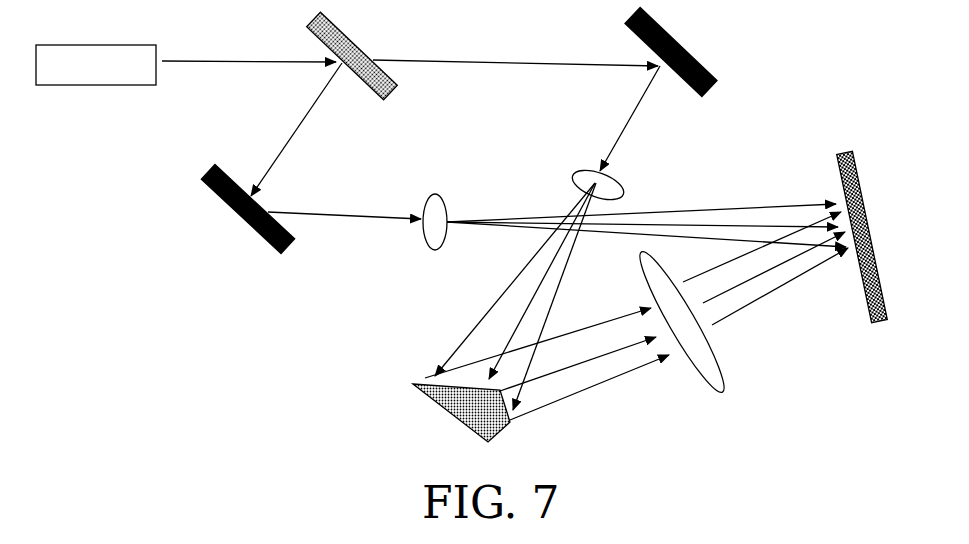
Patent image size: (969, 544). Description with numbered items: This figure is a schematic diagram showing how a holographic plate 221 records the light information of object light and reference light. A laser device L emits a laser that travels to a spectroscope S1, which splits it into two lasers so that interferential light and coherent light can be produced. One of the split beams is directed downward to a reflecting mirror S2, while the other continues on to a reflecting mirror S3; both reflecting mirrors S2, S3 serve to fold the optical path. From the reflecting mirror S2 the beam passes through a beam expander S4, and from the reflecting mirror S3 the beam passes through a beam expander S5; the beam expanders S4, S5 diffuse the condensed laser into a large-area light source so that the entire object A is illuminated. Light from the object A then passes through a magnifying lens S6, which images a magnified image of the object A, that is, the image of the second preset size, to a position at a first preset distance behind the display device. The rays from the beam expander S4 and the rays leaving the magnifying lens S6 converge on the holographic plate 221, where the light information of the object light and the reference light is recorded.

The laser device L is at (96, 52).
The spectroscope S1 is at (352, 53).
The reflecting mirror S2 is at (247, 209).
The reflecting mirror S3 is at (671, 52).
The beam expander S4 is at (432, 240).
The beam expander S5 is at (620, 184).
The magnifying lens S6 is at (695, 321).
The object A is at (461, 419).
The holographic plate 221 is at (877, 237).